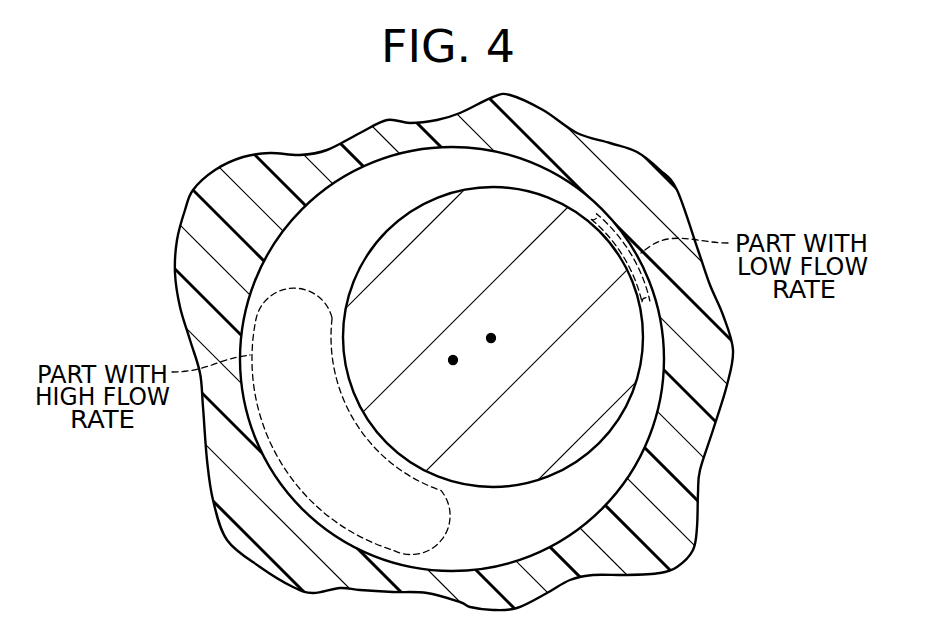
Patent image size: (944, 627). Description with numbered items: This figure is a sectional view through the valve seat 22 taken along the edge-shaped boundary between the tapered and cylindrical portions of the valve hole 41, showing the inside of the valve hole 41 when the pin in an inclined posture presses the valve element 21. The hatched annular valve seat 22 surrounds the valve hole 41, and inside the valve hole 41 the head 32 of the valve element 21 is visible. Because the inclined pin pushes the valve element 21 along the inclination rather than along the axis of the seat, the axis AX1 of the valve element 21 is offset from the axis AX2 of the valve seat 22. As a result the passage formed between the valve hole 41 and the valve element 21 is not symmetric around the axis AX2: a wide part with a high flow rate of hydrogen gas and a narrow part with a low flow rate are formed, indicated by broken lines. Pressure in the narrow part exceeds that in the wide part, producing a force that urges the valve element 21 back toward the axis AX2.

The valve seat 22 is at (192, 206).
The valve hole 41 is at (665, 421).
The head 32 is at (543, 207).
The valve element 21 is at (500, 313).
The axis of the valve element AX1 is at (497, 335).
The axis of the valve seat AX2 is at (452, 364).